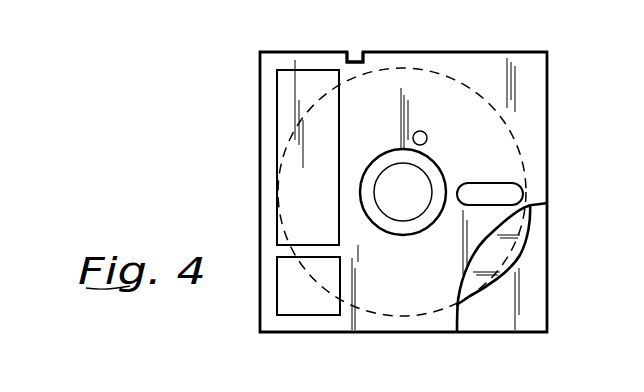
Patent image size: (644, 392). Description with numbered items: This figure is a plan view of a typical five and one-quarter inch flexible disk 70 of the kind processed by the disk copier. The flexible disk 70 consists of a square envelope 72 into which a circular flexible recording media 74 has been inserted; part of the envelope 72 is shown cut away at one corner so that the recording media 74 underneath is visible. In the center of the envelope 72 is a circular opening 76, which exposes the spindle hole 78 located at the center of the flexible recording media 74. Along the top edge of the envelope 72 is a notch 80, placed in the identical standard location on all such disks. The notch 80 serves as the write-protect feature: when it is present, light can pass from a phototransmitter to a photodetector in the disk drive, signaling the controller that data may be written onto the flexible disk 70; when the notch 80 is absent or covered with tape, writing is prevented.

The flexible disk 70 is at (520, 53).
The square envelope 72 is at (493, 146).
The circular flexible recording media 74 is at (521, 250).
The circular opening 76 is at (392, 158).
The spindle hole 78 is at (396, 212).
The notch 80 is at (354, 58).